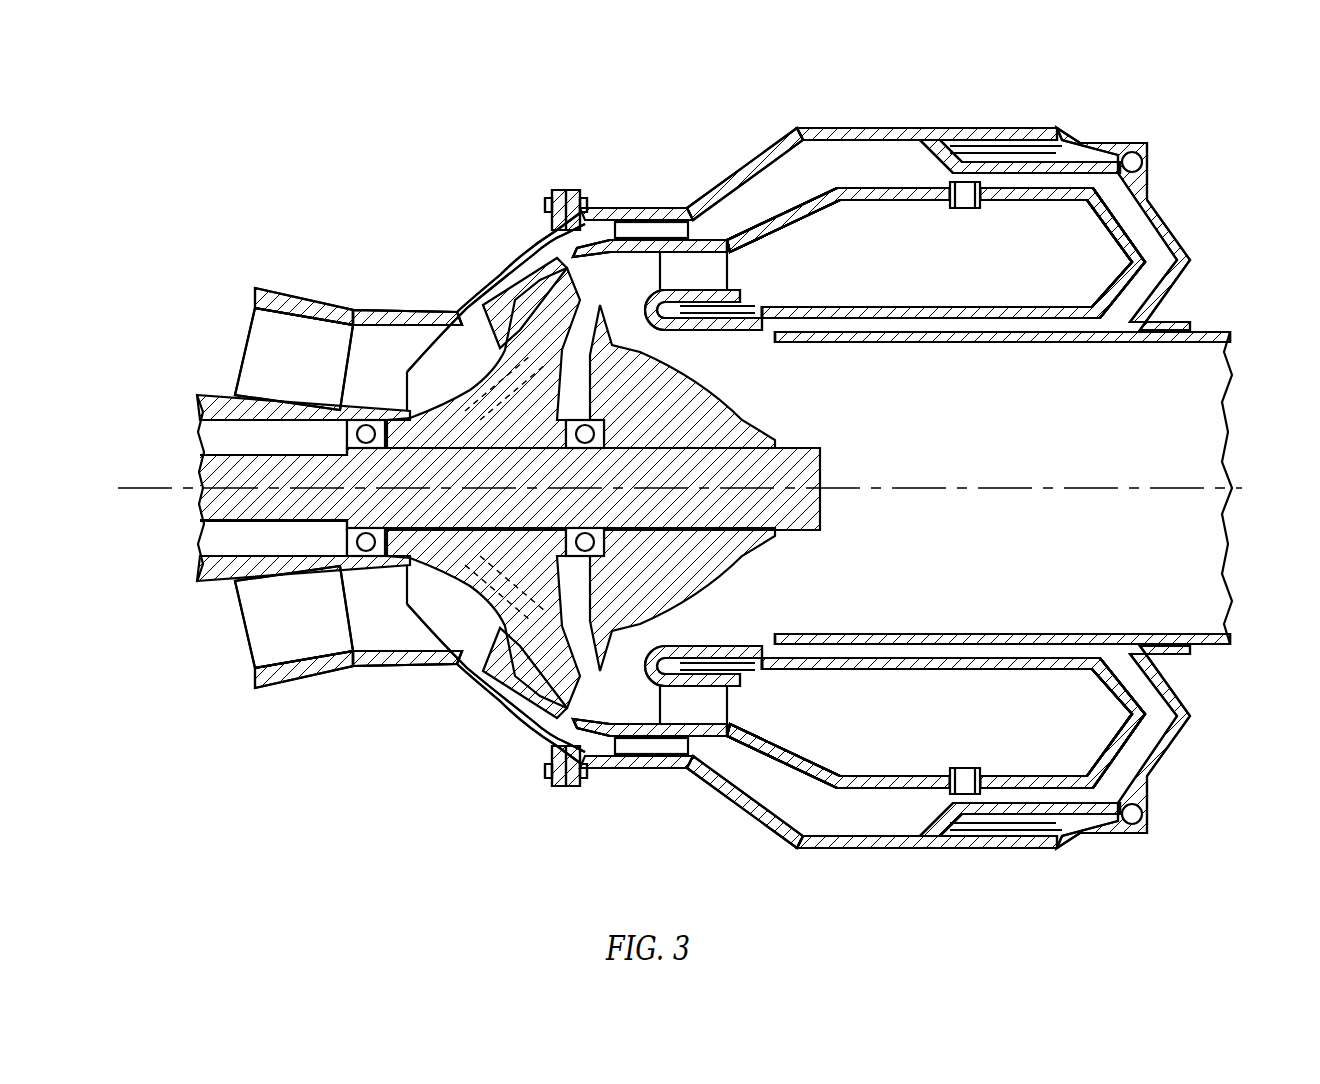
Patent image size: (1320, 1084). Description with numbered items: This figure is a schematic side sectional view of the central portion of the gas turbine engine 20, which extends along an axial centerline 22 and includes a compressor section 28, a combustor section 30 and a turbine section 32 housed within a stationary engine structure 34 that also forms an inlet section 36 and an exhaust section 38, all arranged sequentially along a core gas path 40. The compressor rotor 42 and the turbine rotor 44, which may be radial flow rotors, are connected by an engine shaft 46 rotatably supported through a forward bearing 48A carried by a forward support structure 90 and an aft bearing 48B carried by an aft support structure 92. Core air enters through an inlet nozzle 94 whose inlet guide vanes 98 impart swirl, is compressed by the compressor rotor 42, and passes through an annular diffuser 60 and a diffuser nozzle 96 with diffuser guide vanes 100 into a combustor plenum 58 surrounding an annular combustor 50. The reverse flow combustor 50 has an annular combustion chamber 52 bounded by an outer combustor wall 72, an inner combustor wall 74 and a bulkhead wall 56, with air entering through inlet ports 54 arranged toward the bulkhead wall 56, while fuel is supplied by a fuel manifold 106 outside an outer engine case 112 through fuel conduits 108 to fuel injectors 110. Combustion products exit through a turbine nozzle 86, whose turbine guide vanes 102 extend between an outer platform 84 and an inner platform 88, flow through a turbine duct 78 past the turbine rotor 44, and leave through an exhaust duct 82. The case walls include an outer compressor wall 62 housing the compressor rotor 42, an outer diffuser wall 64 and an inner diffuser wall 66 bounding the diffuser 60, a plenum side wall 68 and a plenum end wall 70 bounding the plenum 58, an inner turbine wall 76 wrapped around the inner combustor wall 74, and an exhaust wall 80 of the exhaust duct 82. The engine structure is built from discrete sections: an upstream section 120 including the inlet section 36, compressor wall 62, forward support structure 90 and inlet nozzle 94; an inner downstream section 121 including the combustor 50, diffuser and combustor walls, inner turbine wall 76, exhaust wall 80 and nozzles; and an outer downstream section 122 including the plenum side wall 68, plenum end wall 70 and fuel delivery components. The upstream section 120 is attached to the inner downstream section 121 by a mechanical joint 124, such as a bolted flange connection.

The gas turbine engine 20 is at (288, 128).
The axial centerline 22 is at (124, 485).
The compressor section 28 is at (468, 716).
The combustor section 30 is at (808, 870).
The turbine section 32 is at (627, 704).
The stationary engine structure 34 is at (326, 270).
The inlet section 36 is at (292, 714).
The exhaust section 38 is at (1217, 654).
The core gas path 40 is at (385, 618).
The compressor rotor 42 is at (444, 655).
The turbine rotor 44 is at (700, 567).
The engine shaft 46 is at (822, 505).
The forward bearing 48A is at (385, 543).
The aft bearing 48B is at (604, 540).
The annular combustor 50 is at (889, 186).
The annular combustion chamber 52 is at (881, 248).
The inlet ports 54 is at (965, 209).
The bulkhead wall 56 is at (1112, 237).
The combustor plenum 58 is at (837, 176).
The annular diffuser 60 is at (657, 197).
The outer compressor wall 62 is at (484, 289).
The outer diffuser wall 64 is at (624, 224).
The inner diffuser wall 66 is at (739, 251).
The plenum side wall 68 is at (839, 125).
The plenum end wall 70 is at (1176, 230).
The outer combustor wall 72 is at (1001, 204).
The inner combustor wall 74 is at (986, 305).
The inner turbine wall 76 is at (972, 322).
The turbine duct 78 is at (931, 346).
The exhaust wall 80 is at (1207, 347).
The exhaust duct 82 is at (1217, 331).
The outer platform 84 is at (731, 256).
The turbine nozzle 86 is at (657, 266).
The inner platform 88 is at (736, 291).
The forward support structure 90 is at (200, 566).
The aft support structure 92 is at (575, 642).
The inlet nozzle 94 is at (228, 342).
The diffuser nozzle 96 is at (692, 237).
The inlet guide vanes 98 is at (232, 383).
The diffuser guide vanes 100 is at (578, 206).
The turbine guide vanes 102 is at (731, 281).
The fuel manifold 106 is at (1153, 151).
The fuel conduits 108 is at (1032, 159).
The fuel injectors 110 is at (941, 178).
The outer engine case 112 is at (977, 131).
The upstream section 120 is at (374, 302).
The inner downstream section 121 is at (751, 153).
The outer downstream section 122 is at (1096, 139).
The mechanical joint 124 is at (567, 804).